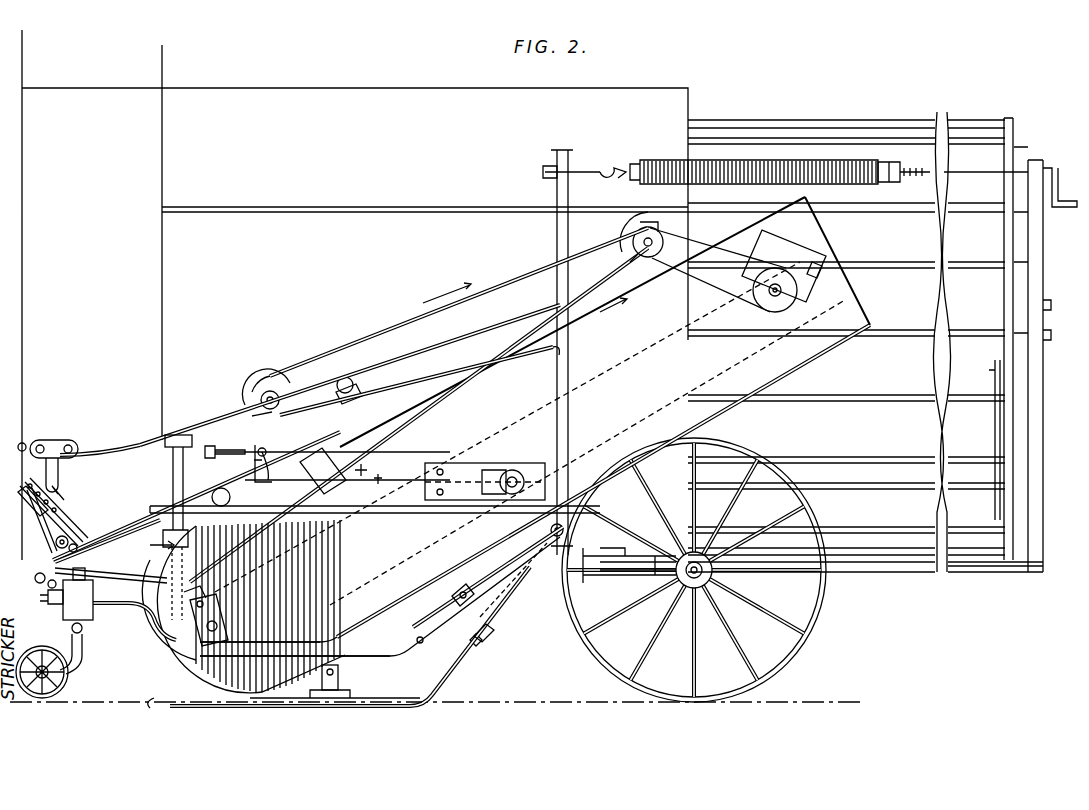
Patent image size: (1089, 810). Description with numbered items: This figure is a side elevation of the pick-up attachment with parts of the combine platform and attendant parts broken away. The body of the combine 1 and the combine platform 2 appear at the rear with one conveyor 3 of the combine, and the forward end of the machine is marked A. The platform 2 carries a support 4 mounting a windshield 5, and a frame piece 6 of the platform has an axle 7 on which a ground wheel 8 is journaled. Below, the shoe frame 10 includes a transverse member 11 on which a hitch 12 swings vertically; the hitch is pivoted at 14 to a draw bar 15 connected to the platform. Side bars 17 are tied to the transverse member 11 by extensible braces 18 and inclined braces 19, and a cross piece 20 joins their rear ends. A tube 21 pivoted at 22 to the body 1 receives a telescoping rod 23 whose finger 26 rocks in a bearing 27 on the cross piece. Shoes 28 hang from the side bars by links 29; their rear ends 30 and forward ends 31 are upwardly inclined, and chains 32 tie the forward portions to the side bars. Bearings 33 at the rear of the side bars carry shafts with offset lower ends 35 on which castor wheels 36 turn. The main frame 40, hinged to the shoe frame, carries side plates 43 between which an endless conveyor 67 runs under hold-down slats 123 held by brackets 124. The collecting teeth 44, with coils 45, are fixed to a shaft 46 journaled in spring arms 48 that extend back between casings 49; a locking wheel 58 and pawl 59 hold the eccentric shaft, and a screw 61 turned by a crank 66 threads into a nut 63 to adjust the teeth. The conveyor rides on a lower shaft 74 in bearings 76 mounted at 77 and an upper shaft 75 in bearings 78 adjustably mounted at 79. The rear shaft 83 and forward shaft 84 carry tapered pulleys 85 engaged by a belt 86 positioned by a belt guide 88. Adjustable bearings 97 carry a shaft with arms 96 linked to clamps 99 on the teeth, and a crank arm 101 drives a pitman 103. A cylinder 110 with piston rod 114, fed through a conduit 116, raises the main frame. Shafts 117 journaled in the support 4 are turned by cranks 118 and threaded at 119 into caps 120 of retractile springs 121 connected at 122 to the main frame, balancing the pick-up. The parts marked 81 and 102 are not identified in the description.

The body of the combine 1 is at (280, 88).
The combine platform 2 is at (976, 572).
The conveyor 3 is at (840, 138).
The support 4 is at (1042, 292).
The windshield 5 is at (994, 424).
The frame piece 6 is at (688, 530).
The axle 7 is at (714, 574).
The ground wheel 8 is at (702, 570).
The shoe frame 10 is at (372, 650).
The transverse member 11 is at (550, 530).
The hitch 12 is at (552, 560).
The pivot 14 is at (606, 578).
The draw bar 15 is at (647, 575).
The side bars 17 is at (416, 645).
The longitudinally extensible braces 18 is at (380, 596).
The inclined braces 19 is at (468, 588).
The cross piece 20 is at (560, 510).
The tube 21 is at (56, 440).
The pivotal connection 22 is at (20, 442).
The rod 23 is at (110, 578).
The finger 26 is at (36, 576).
The bearing 27 is at (47, 590).
The shoes 28 is at (390, 707).
The links 29 is at (322, 676).
The rear ends of the shoes 30 is at (158, 712).
The forward ends of the shoes 31 is at (478, 668).
The flexible elements 32 is at (494, 632).
The bearings 33 is at (92, 622).
The offset lower ends 35 is at (83, 636).
The castor wheels 36 is at (68, 690).
The main frame 40 is at (406, 358).
The side plates 43 is at (790, 355).
The teeth 44 is at (160, 522).
The coils 45 is at (172, 500).
The shaft 46 is at (282, 475).
The spring arms 48 is at (365, 471).
The casings 49 is at (432, 513).
The locking wheel 58 is at (548, 478).
The pawl 59 is at (514, 470).
The screw 61 is at (330, 450).
The nut 63 is at (290, 450).
The crank 66 is at (220, 490).
The endless conveyor 67 is at (517, 426).
The shaft 74 is at (175, 660).
The shaft 75 is at (790, 300).
The bearings 76 is at (232, 622).
The mounting 77 is at (226, 602).
The bearings 78 is at (828, 262).
The adjustable mounting 79 is at (826, 280).
The belt 81 is at (718, 270).
The rear shaft 83 is at (272, 385).
The forward shaft 84 is at (633, 238).
The oppositely-tapered elongated pulleys 85 is at (650, 226).
The belt 86 is at (372, 338).
The belt guide 88 is at (350, 378).
The arms 96 is at (80, 505).
The adjustable bearings 97 is at (76, 532).
The clamps 99 is at (138, 554).
The crank arm 101 is at (34, 515).
The link 102 is at (66, 484).
The pitman 103 is at (146, 440).
The cylinder 110 is at (84, 652).
The rod 114 is at (168, 460).
The conduit 116 is at (136, 600).
The shafts 117 is at (965, 168).
The cranks 118 is at (1064, 172).
The threads 119 is at (910, 166).
The caps 120 is at (886, 164).
The retractile springs 121 is at (758, 160).
The connection 122 is at (616, 166).
The hold-down slats 123 is at (432, 400).
The brackets 124 is at (336, 460).
The forward end A is at (1008, 125).